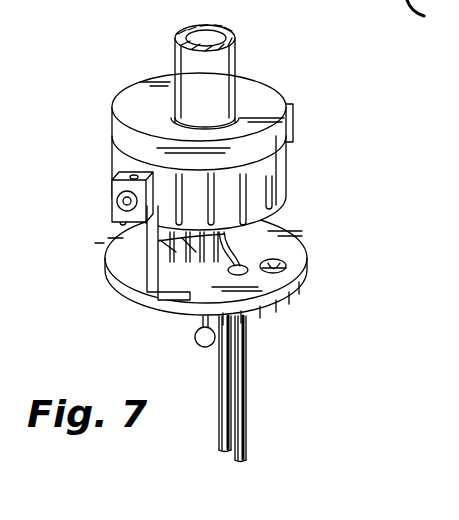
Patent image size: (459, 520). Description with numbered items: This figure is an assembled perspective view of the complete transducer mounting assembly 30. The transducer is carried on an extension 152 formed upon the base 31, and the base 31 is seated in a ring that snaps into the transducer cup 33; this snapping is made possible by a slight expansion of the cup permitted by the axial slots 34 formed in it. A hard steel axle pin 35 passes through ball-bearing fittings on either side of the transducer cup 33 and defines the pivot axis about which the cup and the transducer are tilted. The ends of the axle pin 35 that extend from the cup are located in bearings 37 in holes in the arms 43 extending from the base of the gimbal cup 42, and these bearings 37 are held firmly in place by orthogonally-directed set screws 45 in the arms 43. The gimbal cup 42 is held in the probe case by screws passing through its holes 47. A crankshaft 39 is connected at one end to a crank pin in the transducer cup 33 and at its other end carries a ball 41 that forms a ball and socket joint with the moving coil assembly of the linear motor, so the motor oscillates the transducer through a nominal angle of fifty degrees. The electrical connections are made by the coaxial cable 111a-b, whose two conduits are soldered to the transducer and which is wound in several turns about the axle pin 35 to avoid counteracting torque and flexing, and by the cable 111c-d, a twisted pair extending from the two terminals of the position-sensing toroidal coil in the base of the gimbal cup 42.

The transducer mounting assembly 30 is at (330, 244).
The base 31 is at (250, 98).
The transducer cup 33 is at (283, 166).
The axial slots 34 is at (273, 198).
The axle pin 35 is at (121, 198).
The bearings 37 is at (118, 193).
The crankshaft 39 is at (216, 265).
The ball 41 is at (196, 342).
The gimbal cup 42 is at (162, 309).
The arms 43 is at (118, 262).
The set screws 45 is at (135, 176).
The holes 47 is at (303, 272).
The extension 152 is at (183, 62).
The cable 111a-b is at (247, 358).
The cable 111c-d is at (223, 440).